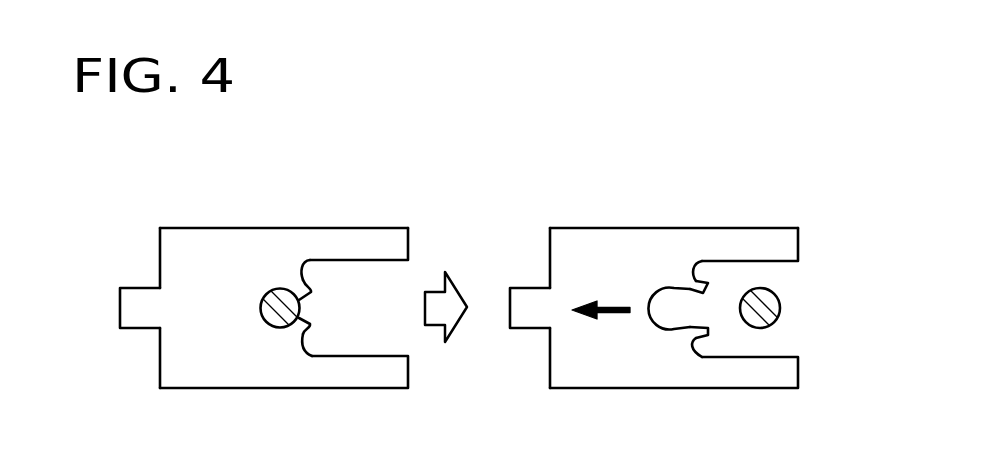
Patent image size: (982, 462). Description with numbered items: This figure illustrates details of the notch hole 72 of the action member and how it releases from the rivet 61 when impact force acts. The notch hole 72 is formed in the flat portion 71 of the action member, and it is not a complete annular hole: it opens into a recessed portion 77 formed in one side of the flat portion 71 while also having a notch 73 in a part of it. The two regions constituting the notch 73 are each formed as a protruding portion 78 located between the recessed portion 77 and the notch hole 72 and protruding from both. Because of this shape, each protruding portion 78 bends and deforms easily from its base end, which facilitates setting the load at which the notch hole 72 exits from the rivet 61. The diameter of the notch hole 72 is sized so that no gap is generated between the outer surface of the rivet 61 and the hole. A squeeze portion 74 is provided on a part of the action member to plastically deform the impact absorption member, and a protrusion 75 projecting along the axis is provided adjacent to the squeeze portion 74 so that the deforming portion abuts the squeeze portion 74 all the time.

The flat portion 71 is at (237, 352).
The notch hole 72 is at (278, 289).
The notch 73 is at (301, 297).
The squeeze portion 74 is at (156, 264).
The protrusion 75 is at (119, 309).
The recessed portion 77 is at (353, 264).
The protruding portion 78 is at (301, 285).
The rivet 61 is at (262, 308).